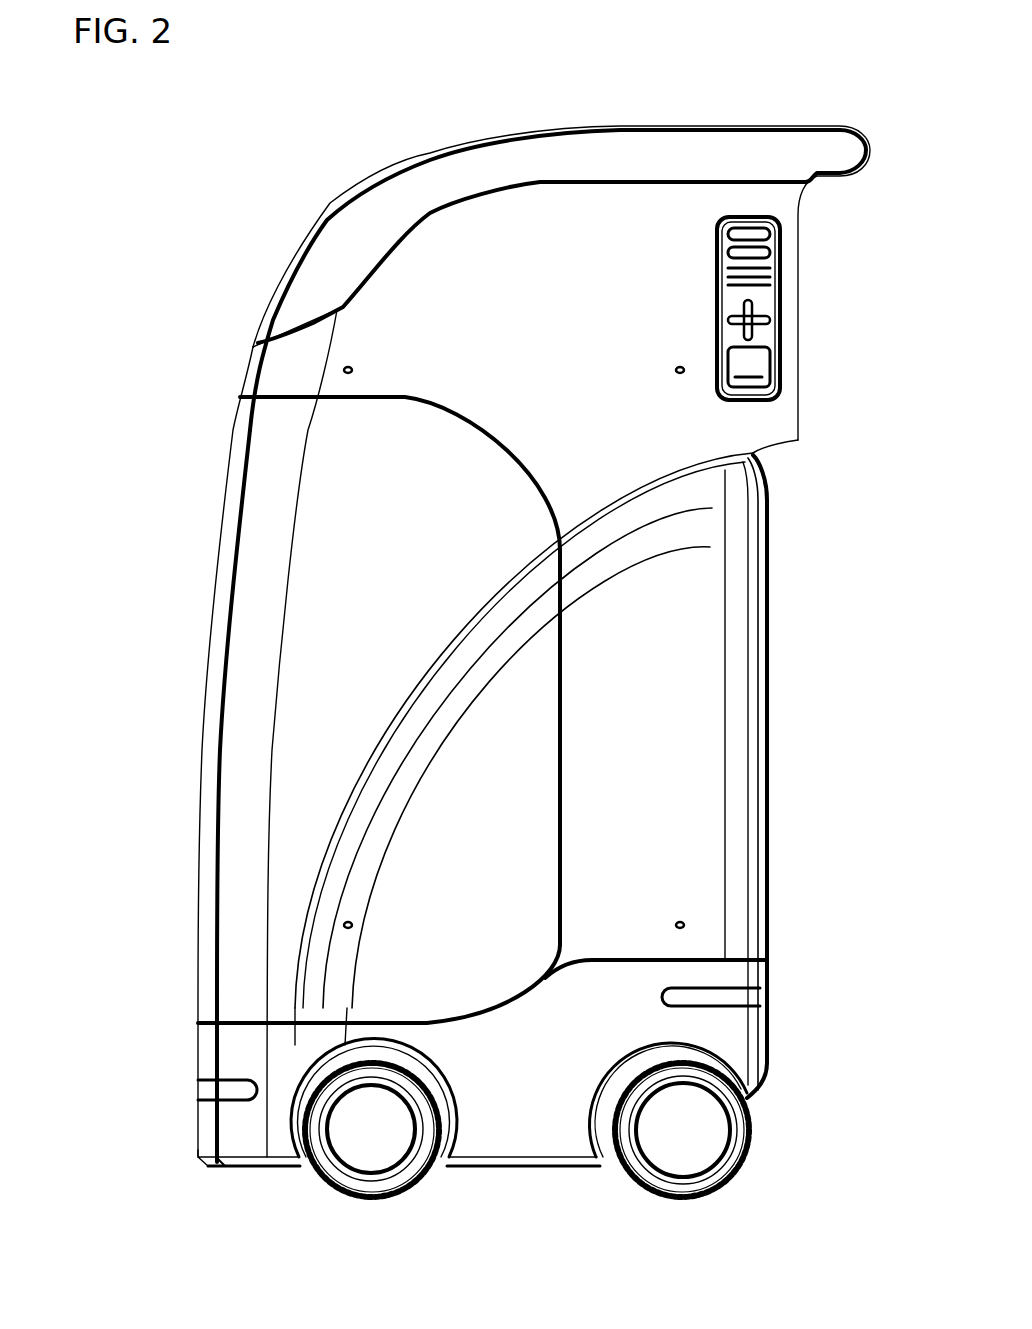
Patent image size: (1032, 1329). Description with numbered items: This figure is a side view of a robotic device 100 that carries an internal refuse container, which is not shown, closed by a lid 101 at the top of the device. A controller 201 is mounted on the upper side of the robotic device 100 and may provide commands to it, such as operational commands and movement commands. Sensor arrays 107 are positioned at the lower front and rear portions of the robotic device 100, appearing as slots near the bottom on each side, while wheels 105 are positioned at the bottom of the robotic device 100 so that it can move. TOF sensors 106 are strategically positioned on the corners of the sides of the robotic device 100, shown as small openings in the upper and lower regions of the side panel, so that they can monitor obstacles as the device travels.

The robotic device 100 is at (461, 753).
The lid 101 is at (373, 217).
The wheels 105 is at (675, 1103).
The TOF sensors 106 is at (337, 920).
The sensor arrays 107 is at (238, 1088).
The controller 201 is at (750, 248).